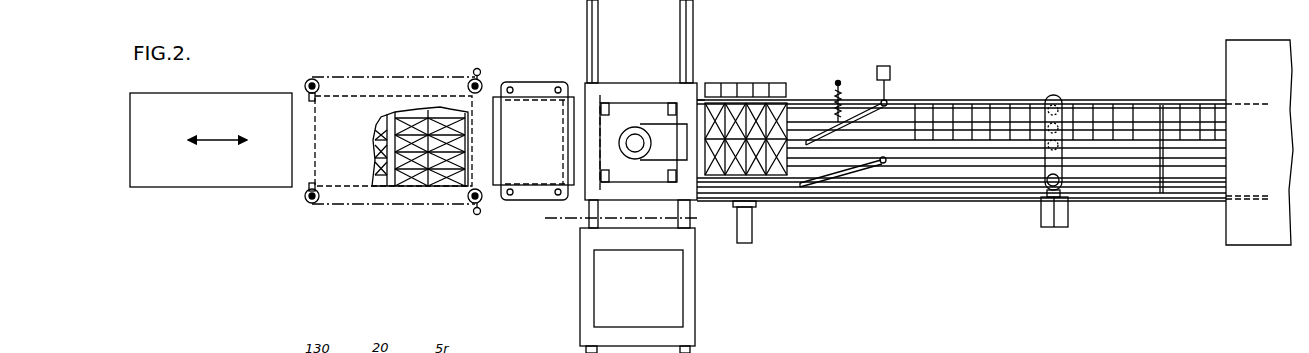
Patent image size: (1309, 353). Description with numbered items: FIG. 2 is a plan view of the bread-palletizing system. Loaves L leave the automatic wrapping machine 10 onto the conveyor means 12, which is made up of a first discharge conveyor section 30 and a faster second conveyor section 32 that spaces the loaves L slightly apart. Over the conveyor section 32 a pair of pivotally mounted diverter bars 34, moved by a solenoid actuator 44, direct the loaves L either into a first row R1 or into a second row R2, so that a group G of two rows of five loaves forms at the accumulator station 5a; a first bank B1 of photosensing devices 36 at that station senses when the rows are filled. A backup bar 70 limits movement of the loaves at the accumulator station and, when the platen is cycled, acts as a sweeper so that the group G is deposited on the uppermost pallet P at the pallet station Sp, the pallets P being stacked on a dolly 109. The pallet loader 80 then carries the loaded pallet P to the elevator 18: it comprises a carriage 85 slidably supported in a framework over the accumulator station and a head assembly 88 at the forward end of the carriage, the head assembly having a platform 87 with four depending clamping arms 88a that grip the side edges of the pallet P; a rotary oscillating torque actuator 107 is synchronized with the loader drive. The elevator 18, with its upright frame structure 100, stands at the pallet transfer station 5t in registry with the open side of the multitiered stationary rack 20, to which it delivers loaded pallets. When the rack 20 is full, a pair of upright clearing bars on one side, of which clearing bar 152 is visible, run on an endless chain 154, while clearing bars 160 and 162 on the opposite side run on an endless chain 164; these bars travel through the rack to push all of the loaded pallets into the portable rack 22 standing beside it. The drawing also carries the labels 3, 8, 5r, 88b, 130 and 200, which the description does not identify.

The portable rack 22 is at (131, 116).
The section line 8 is at (300, 230).
The stationary rack 20 is at (372, 143).
The endless chain 164 is at (316, 80).
The upright clearing bar 160 is at (472, 74).
The upright clearing bar 162 is at (309, 93).
The upright clearing bar 152 is at (312, 196).
The endless chain 154 is at (378, 204).
The carriage frame 130 is at (352, 94).
The stack of crates 5r is at (432, 187).
The elevator 18 is at (530, 134).
The upright frame structure 100 is at (497, 102).
The pallet transfer station 5t is at (528, 196).
The pallet station Sp is at (732, 176).
The pallet loader 80 is at (650, 112).
The head assembly 88 is at (638, 142).
The clamping arms 88a is at (606, 102).
The guide blocks 88b is at (660, 151).
The carriage 85 is at (662, 160).
The rotary oscillating torque actuator 107 is at (644, 143).
The platform 87 is at (598, 120).
The backup bar 70 is at (708, 168).
The dolly 109 is at (652, 202).
The pallet P is at (690, 287).
The section line 3 is at (572, 204).
The conveyor means 12 is at (961, 150).
The second conveyor section 32 is at (966, 190).
The first discharge conveyor section 30 is at (1197, 192).
The loaves L is at (786, 150).
The photosensing devices 36 is at (708, 84).
The first row R1 is at (728, 112).
The group of loaves G is at (744, 100).
The first bank of photosensing devices B1 is at (782, 84).
The accumulator station 5a is at (770, 176).
The second row R2 is at (731, 176).
The diverter bars 34 is at (840, 140).
The solenoid actuator 44 is at (884, 66).
The stop lever 200 is at (1045, 165).
The automatic wrapping machine 10 is at (1268, 145).